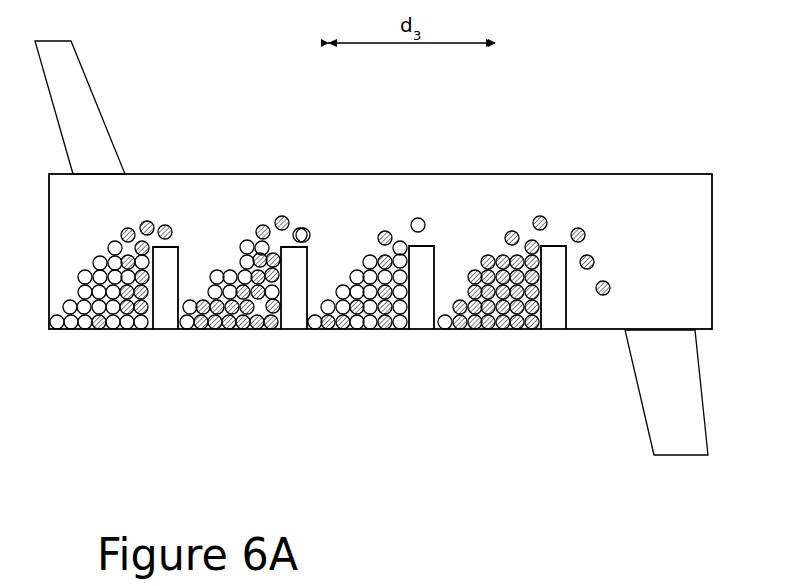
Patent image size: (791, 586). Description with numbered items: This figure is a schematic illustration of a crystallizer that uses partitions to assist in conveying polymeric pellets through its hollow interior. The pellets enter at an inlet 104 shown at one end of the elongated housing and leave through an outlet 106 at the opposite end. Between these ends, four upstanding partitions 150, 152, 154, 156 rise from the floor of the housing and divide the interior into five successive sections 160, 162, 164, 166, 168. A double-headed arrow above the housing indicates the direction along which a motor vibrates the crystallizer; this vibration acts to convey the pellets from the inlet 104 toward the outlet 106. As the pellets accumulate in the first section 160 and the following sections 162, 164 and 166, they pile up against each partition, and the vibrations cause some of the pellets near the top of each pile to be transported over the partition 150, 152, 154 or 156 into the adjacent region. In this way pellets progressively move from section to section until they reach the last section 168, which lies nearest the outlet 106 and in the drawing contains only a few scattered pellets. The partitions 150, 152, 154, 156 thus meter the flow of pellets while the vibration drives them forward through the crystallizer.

The inlet 104 is at (98, 106).
The outlet 106 is at (638, 392).
The partition 150 is at (162, 305).
The partition 152 is at (293, 305).
The partition 154 is at (423, 303).
The partition 156 is at (555, 300).
The section 160 is at (102, 288).
The section 162 is at (225, 287).
The section 164 is at (348, 280).
The section 166 is at (482, 278).
The section 168 is at (615, 277).